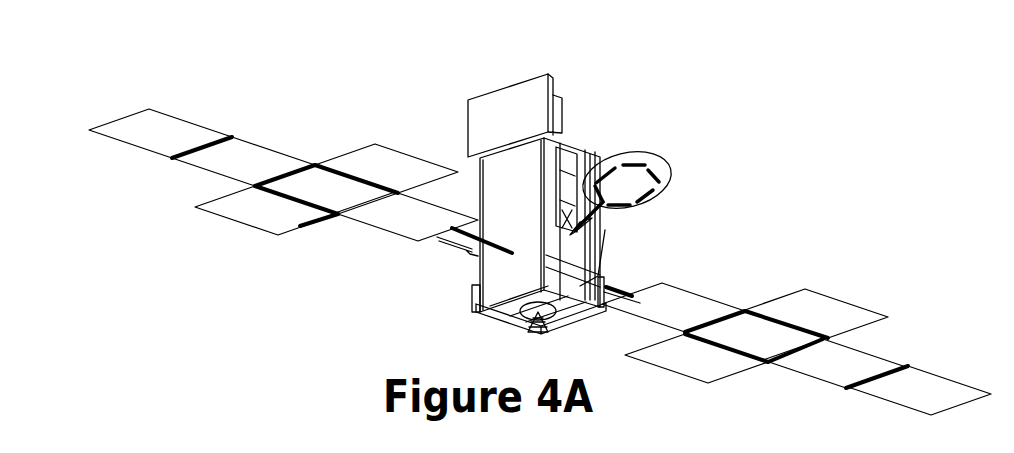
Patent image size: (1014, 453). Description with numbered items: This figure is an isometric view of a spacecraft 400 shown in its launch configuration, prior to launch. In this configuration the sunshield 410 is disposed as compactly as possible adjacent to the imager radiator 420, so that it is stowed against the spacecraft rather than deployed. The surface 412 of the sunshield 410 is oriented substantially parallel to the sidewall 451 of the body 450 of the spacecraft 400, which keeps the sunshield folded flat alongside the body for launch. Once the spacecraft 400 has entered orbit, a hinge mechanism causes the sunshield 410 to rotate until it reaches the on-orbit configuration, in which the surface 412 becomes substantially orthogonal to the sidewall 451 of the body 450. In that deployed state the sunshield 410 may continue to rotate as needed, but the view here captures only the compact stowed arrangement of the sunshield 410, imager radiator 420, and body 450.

The spacecraft 400 is at (707, 105).
The sunshield 410 is at (468, 100).
The surface of the sunshield 412 is at (500, 127).
The imager radiator 420 is at (563, 132).
The body 450 is at (600, 250).
The sidewall 451 is at (496, 277).